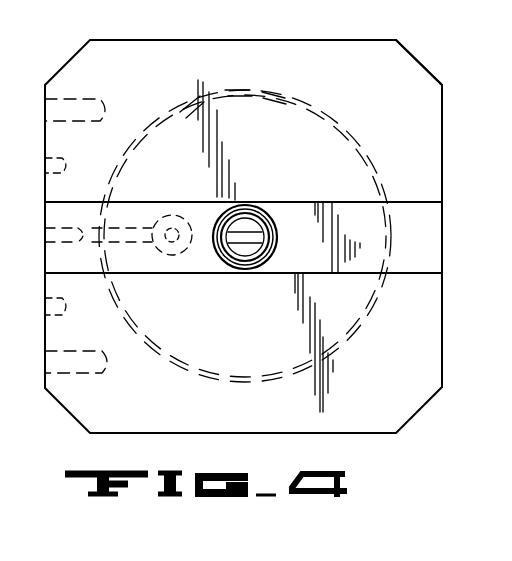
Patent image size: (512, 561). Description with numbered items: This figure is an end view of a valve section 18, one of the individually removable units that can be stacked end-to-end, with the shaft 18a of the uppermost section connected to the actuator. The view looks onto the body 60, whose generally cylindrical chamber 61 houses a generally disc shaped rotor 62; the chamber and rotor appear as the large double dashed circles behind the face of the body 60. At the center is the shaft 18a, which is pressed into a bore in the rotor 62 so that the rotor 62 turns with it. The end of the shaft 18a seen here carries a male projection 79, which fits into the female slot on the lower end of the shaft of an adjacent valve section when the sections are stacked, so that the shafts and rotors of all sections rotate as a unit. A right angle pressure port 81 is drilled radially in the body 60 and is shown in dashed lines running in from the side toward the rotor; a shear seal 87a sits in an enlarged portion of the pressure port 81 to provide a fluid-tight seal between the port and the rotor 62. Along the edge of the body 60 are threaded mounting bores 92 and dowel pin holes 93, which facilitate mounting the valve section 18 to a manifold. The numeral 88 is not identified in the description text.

The valve section 18 is at (421, 56).
The body 60 is at (442, 84).
The rotor 62 is at (338, 112).
The chamber 61 is at (368, 157).
The male projection 79 is at (258, 240).
The shaft 18a is at (256, 203).
The shear seal 87a is at (184, 216).
The pressure port 81 is at (82, 244).
The threaded mounting bores 92 is at (46, 117).
The dowel pin holes 93 is at (45, 163).
The adjacent component 88 is at (511, 412).